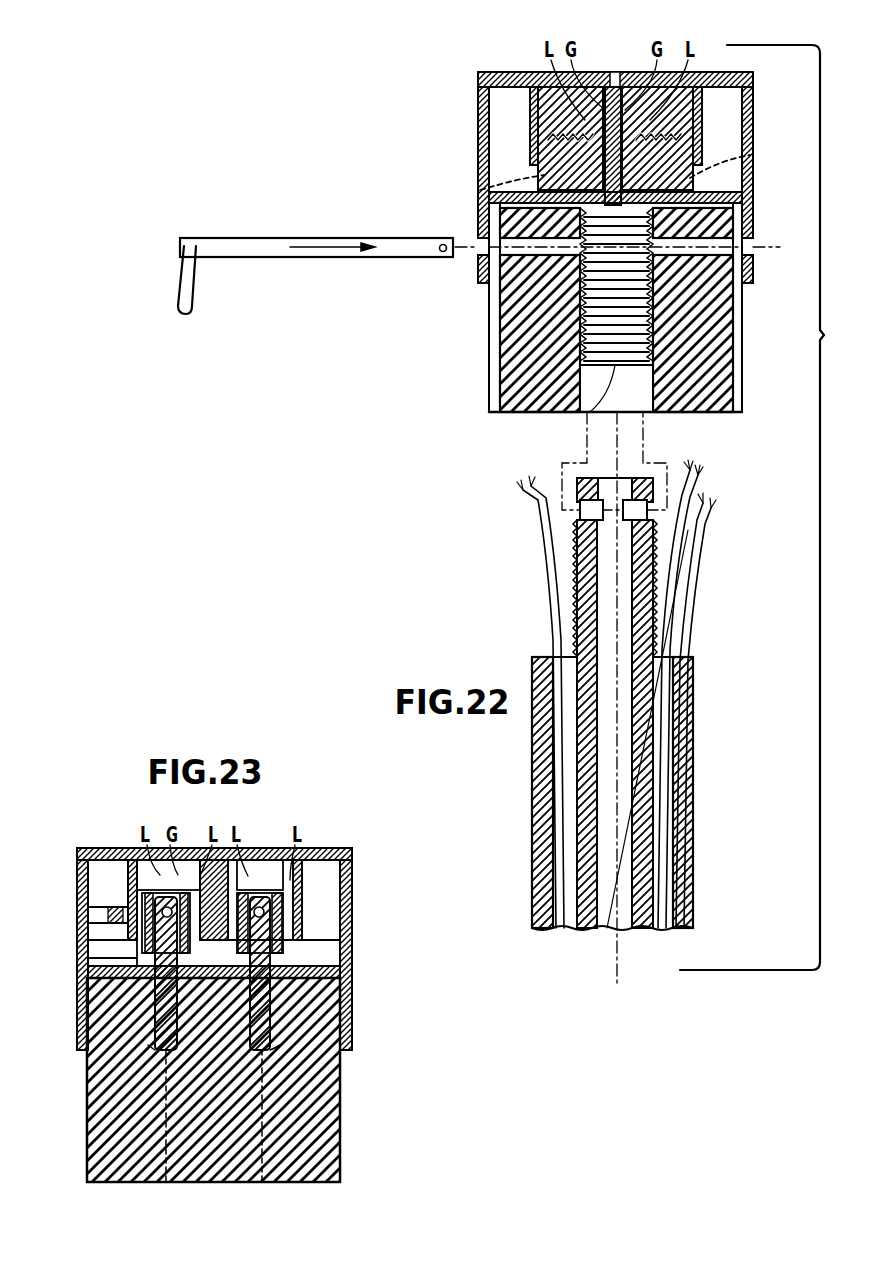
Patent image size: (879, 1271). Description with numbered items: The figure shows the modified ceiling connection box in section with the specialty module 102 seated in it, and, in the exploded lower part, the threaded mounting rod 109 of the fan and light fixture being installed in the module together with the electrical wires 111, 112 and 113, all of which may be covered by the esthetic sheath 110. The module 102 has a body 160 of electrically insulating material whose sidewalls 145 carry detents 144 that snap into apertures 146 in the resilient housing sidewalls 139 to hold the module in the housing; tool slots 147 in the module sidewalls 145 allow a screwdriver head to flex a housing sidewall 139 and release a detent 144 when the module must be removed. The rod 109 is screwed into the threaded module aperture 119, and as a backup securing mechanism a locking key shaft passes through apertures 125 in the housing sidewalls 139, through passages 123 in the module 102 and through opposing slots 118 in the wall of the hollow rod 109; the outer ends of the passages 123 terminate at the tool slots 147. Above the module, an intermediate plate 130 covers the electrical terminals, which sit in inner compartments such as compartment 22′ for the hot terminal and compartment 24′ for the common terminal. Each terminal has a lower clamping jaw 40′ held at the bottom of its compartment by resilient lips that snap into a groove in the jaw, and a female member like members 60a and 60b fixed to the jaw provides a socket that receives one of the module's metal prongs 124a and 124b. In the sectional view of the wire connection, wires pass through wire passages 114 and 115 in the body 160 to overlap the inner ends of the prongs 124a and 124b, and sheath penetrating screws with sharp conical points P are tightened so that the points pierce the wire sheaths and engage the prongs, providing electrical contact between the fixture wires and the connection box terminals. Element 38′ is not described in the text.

In FIG. 22, the inner compartment 22′ is at (700, 112).
In FIG. 22, the inner compartment 24′ is at (528, 112).
In FIG. 23, the inner compartment 24′ is at (128, 920).
In FIG. 23, the connector 38′ is at (125, 960).
In FIG. 23, the lower clamping jaw 40′ is at (130, 862).
In FIG. 23, the female member 60a is at (283, 925).
In FIG. 23, the female member 60b is at (108, 903).
In FIG. 22, the specialty module 102 is at (462, 340).
In FIG. 23, the specialty module 102 is at (352, 1117).
In FIG. 22, the threaded mounting rod 109 is at (660, 712).
In FIG. 22, the esthetic sheath 110 is at (695, 832).
In FIG. 22, the electrical wire 111 is at (548, 600).
In FIG. 22, the electrical wire 112 is at (660, 578).
In FIG. 22, the electrical wire 113 is at (682, 563).
In FIG. 23, the wire passage 114 is at (163, 1182).
In FIG. 23, the wire passage 115 is at (270, 1182).
In FIG. 22, the slots 118 is at (585, 512).
In FIG. 22, the threaded module aperture 119 is at (590, 412).
In FIG. 22, the passages 123 is at (522, 262).
In FIG. 22, the metal prong 124a is at (748, 153).
In FIG. 23, the metal prong 124a is at (352, 865).
In FIG. 22, the metal prong 124b is at (482, 188).
In FIG. 23, the metal prong 124b is at (128, 893).
In FIG. 22, the apertures 125 is at (475, 248).
In FIG. 22, the intermediate plate 130 is at (740, 188).
In FIG. 23, the intermediate plate 130 is at (338, 963).
In FIG. 22, the housing sidewall 139 is at (482, 160).
In FIG. 23, the housing sidewall 139 is at (352, 923).
In FIG. 23, the detents 144 is at (78, 1028).
In FIG. 22, the module sidewall 145 is at (494, 388).
In FIG. 23, the apertures 146 is at (78, 1018).
In FIG. 22, the tool slots 147 is at (494, 338).
In FIG. 22, the module body 160 is at (500, 438).
In FIG. 23, the module body 160 is at (352, 1158).
In FIG. 23, the conical point P is at (110, 1055).